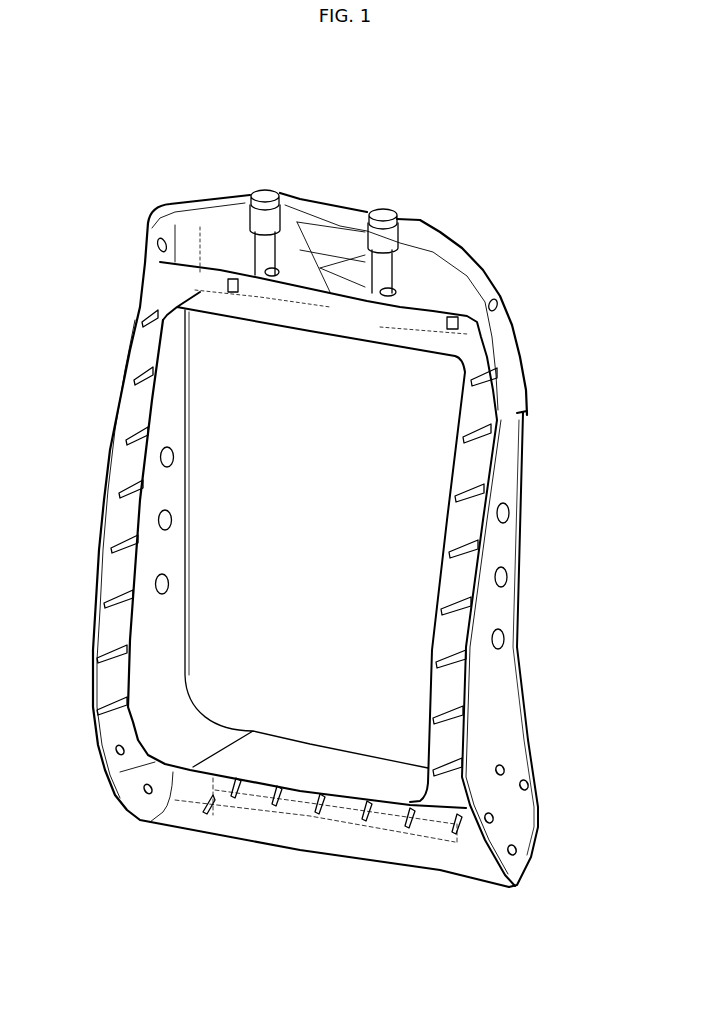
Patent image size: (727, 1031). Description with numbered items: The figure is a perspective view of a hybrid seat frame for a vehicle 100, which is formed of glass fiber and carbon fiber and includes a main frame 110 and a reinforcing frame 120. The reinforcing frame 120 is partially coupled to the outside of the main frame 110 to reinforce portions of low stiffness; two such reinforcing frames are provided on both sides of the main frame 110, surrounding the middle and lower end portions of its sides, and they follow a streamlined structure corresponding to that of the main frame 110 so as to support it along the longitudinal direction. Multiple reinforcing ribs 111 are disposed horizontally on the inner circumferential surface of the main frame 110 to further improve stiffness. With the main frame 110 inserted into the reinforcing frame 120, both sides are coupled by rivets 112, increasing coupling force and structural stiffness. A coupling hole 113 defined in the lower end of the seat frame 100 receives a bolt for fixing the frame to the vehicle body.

The hybrid seat frame for a vehicle 100 is at (112, 93).
The main frame 110 is at (145, 302).
The reinforcing ribs 111 is at (117, 441).
The rivets 112 is at (510, 513).
The coupling hole 113 is at (530, 784).
The reinforcing frame 120 is at (503, 683).